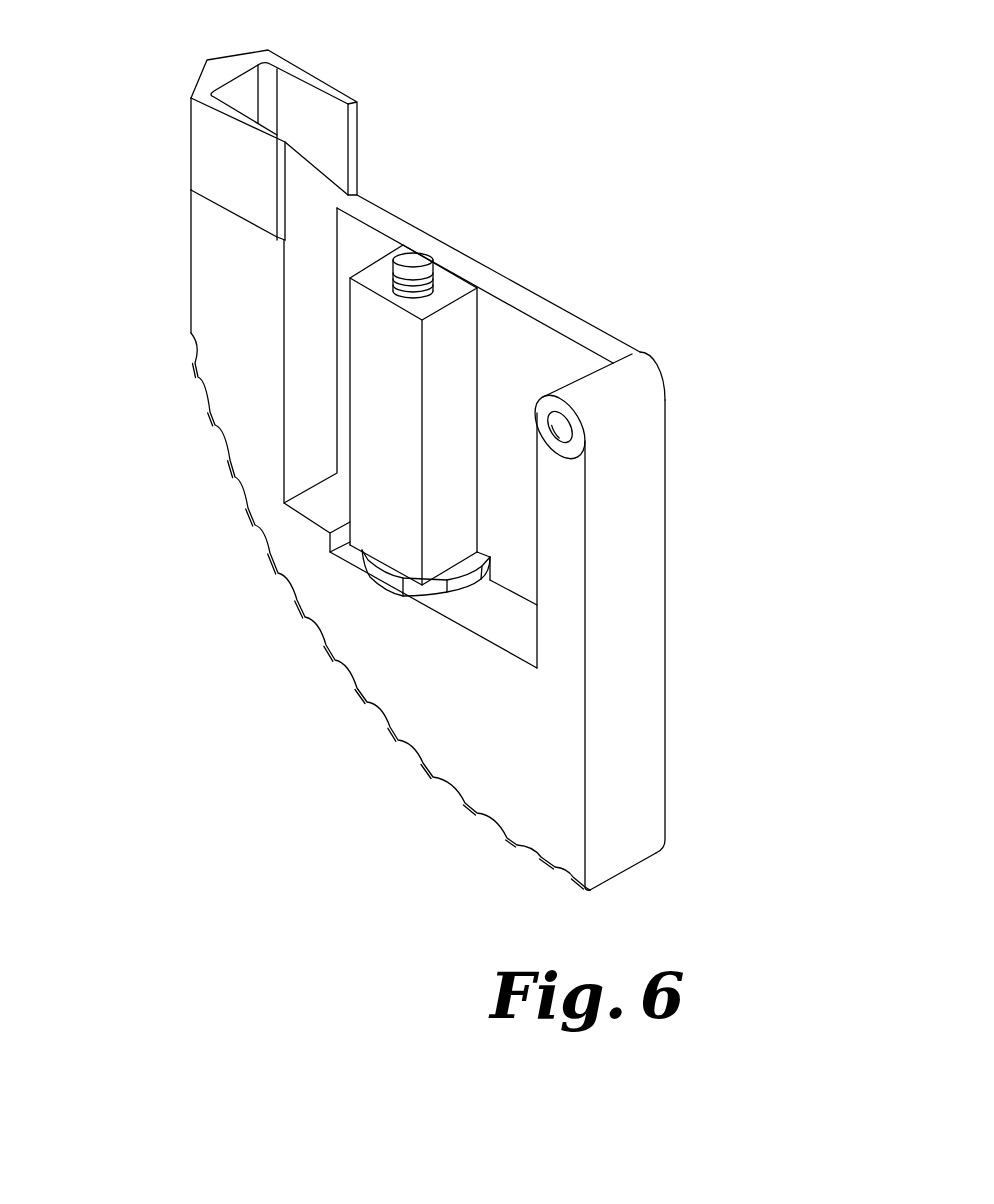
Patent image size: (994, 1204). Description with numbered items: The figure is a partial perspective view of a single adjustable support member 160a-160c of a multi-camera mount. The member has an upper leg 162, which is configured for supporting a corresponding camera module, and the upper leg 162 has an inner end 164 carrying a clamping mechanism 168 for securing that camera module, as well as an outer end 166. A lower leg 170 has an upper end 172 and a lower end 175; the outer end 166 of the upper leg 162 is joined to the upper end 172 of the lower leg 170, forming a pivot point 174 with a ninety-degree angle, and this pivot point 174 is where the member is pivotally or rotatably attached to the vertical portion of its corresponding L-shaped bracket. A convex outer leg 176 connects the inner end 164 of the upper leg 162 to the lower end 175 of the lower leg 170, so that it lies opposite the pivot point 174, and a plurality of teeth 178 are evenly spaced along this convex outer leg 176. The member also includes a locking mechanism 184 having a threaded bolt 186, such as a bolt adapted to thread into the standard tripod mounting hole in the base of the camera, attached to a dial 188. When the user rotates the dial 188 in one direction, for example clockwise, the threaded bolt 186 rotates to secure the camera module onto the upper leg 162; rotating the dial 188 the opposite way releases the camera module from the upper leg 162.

The adjustable support member 160a-160c is at (328, 590).
The upper leg 162 is at (482, 277).
The inner end 164 is at (333, 176).
The outer end 166 is at (569, 303).
The clamping mechanism 168 is at (262, 187).
The lower leg 170 is at (650, 614).
The upper end 172 is at (633, 452).
The pivot point 174 is at (659, 367).
The lower end 175 is at (623, 835).
The convex outer leg 176 is at (174, 458).
The teeth 178 is at (280, 568).
The locking mechanism 184 is at (455, 665).
The threaded bolt 186 is at (413, 257).
The dial 188 is at (387, 582).